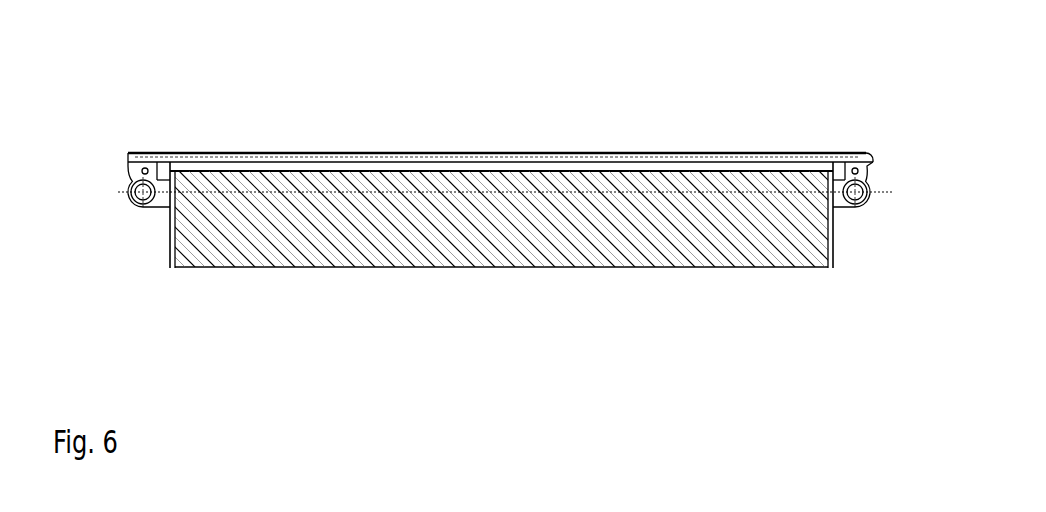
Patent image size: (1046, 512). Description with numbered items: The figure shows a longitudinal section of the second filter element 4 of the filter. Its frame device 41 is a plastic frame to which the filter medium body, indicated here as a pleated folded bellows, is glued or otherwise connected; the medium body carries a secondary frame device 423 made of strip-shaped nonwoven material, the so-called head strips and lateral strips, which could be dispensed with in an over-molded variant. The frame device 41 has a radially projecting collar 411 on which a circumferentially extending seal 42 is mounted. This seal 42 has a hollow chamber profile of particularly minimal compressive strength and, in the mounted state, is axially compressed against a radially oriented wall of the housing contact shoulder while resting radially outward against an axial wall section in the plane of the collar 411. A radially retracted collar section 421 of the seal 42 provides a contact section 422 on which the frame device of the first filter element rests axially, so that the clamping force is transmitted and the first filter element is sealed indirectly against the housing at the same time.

The second filter element 4 is at (503, 103).
The frame device 41 is at (163, 165).
The radially projecting collar 411 is at (147, 165).
The circumferentially extending seal 42 is at (129, 147).
The collar section 421 is at (137, 160).
The contact section 422 is at (148, 166).
The secondary frame device 423 is at (827, 243).